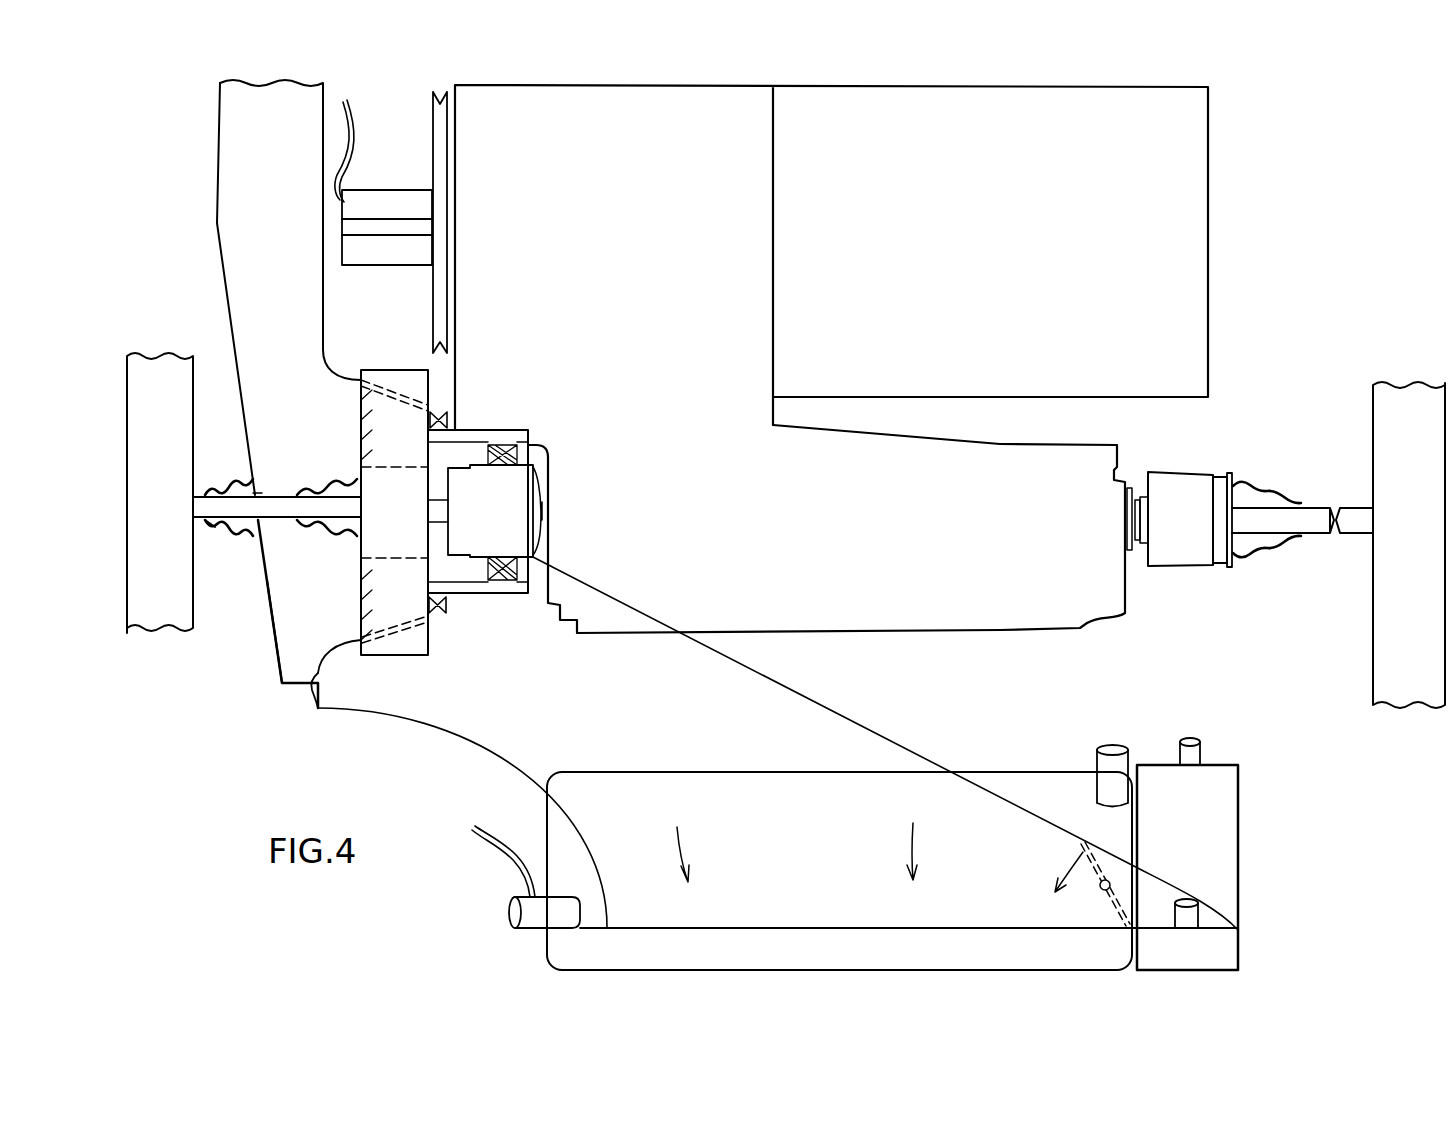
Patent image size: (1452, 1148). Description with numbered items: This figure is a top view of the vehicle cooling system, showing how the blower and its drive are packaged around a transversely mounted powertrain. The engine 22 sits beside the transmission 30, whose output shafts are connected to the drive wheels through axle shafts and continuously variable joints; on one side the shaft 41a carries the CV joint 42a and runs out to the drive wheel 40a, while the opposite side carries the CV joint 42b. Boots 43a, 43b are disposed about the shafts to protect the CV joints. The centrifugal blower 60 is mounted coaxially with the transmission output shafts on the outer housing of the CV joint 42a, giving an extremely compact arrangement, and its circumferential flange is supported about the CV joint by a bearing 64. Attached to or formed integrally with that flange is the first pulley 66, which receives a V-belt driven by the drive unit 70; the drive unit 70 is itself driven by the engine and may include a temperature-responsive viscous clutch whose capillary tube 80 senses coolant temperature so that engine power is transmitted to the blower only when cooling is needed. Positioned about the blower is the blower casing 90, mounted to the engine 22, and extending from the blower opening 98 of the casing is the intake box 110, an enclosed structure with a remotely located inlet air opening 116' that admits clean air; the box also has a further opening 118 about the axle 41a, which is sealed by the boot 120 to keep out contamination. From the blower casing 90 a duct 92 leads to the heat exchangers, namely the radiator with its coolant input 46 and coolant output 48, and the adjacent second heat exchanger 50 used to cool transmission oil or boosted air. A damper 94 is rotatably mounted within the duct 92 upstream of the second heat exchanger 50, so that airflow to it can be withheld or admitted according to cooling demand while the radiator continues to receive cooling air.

The engine 22 is at (995, 217).
The transmission 30 is at (975, 537).
The drive wheel 40a is at (140, 420).
The shaft 41a is at (200, 512).
The continuously variable (CV) joint 42a is at (535, 509).
The continuously variable (CV) joint 42b is at (1190, 555).
The boot 43a is at (345, 485).
The boot 43b is at (1280, 497).
The coolant input 46 is at (508, 912).
The coolant output 48 is at (1095, 762).
The second heat exchanger 50 is at (1225, 952).
The blower 60 is at (395, 636).
The bearing 64 is at (497, 445).
The first pulley 66 is at (440, 605).
The drive unit 70 is at (402, 198).
The capillary tube 80 is at (352, 150).
The blower casing 90 is at (312, 690).
The duct 92 is at (885, 720).
The damper 94 is at (1099, 889).
The blower opening 98 is at (352, 416).
The intake box 110 is at (278, 668).
The inlet air opening 116' is at (263, 394).
The opening 118 is at (277, 523).
The boot 120 is at (253, 535).